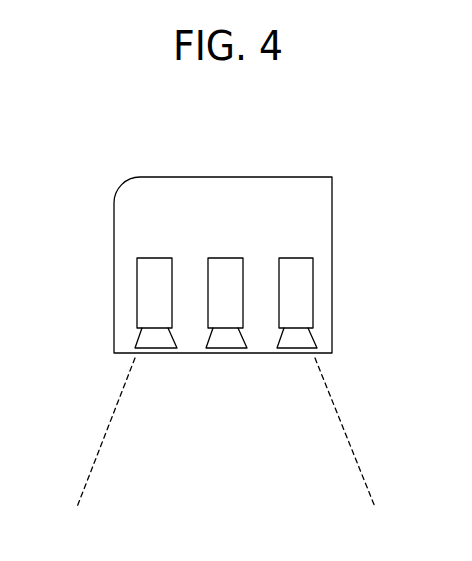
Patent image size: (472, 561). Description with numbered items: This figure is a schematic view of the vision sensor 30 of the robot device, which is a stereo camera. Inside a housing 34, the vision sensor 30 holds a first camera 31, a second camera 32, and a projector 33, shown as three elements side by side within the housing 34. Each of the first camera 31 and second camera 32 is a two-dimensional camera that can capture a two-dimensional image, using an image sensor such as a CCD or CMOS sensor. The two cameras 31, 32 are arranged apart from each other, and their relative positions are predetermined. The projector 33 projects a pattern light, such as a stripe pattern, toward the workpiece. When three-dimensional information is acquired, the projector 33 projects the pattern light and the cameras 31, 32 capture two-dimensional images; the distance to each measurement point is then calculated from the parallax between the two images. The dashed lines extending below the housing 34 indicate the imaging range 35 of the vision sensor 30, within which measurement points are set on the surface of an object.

The vision sensor 30 is at (224, 226).
The first camera 31 is at (295, 284).
The second camera 32 is at (153, 285).
The projector 33 is at (228, 268).
The housing 34 is at (332, 192).
The imaging range 35 is at (338, 413).